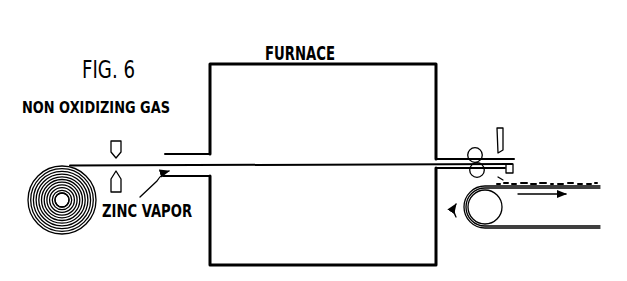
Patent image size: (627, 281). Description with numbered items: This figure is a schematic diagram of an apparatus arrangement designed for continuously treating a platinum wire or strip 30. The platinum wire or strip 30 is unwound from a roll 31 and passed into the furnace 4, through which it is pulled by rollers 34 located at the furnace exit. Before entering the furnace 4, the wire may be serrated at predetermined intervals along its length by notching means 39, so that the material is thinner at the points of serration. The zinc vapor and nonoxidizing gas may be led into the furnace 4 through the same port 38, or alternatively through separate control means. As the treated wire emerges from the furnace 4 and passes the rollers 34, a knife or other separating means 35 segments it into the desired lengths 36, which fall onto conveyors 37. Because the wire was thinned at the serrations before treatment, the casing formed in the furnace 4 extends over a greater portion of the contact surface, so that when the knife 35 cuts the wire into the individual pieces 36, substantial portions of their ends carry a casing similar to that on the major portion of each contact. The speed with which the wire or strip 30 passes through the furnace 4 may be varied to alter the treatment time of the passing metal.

The furnace 4 is at (392, 73).
The platinum wire or strip 30 is at (87, 165).
The roll 31 is at (76, 234).
The rollers 34 is at (477, 148).
The knife or other separating means 35 is at (517, 167).
The desired lengths 36 is at (562, 183).
The conveyors 37 is at (506, 229).
The port 38 is at (187, 177).
The notching means 39 is at (113, 181).